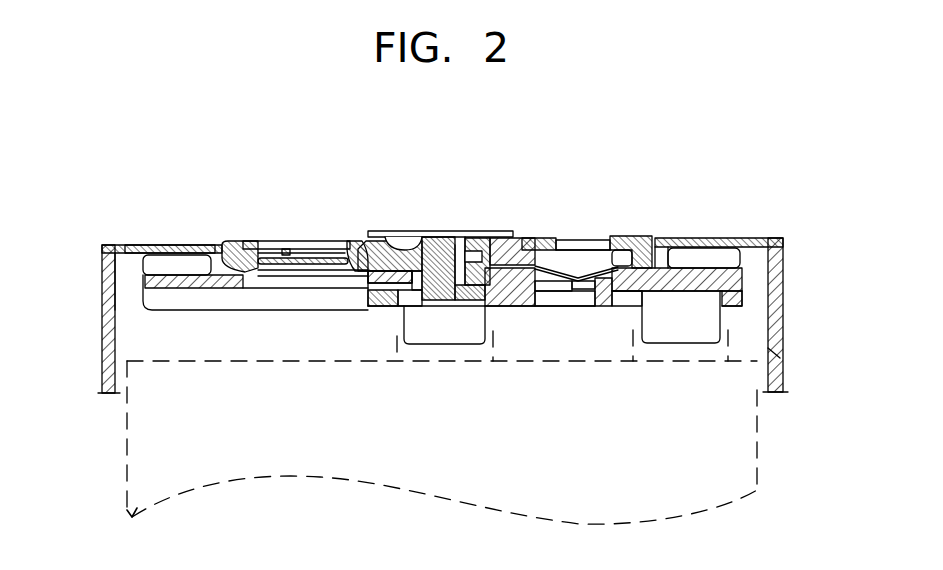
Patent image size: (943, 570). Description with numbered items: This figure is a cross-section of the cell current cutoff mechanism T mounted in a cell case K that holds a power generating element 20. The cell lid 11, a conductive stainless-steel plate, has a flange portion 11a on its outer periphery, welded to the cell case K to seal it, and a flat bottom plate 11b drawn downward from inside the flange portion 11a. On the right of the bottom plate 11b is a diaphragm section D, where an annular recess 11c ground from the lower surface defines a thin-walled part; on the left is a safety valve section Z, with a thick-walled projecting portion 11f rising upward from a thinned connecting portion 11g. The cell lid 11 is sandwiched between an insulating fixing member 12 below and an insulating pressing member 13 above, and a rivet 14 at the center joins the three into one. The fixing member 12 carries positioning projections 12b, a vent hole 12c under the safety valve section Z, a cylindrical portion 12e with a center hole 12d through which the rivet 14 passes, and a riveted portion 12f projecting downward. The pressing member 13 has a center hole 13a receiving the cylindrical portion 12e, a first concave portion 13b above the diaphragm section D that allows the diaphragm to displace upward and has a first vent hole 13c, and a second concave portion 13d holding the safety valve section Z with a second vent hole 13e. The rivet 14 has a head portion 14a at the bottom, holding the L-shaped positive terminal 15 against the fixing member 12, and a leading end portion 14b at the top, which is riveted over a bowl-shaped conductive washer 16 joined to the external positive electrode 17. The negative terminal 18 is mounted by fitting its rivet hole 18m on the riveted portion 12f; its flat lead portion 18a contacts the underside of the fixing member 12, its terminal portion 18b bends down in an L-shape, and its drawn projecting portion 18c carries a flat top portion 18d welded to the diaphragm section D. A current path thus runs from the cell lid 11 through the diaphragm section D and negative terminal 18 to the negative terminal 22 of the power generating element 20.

The cell lid 11 is at (715, 226).
The flange portion 11a is at (130, 245).
The bottom plate 11b is at (518, 240).
The annular recess 11c is at (538, 298).
The projecting portion 11f is at (292, 280).
The connecting portion 11g is at (270, 280).
The fixing member 12 is at (758, 278).
The positioning projections 12b is at (627, 300).
The vent hole 12c is at (282, 280).
The center hole 12d is at (428, 300).
The cylindrical portion 12e is at (423, 240).
The riveted portion 12f is at (768, 352).
The pressing member 13 is at (251, 228).
The center hole 13a is at (492, 300).
The first concave portion 13b is at (546, 240).
The first vent hole 13c is at (578, 240).
The second concave portion 13d is at (348, 242).
The second vent hole 13e is at (312, 242).
The rivet 14 is at (459, 316).
The head portion 14a is at (416, 306).
The leading end portion 14b is at (448, 234).
The positive terminal 15 is at (432, 337).
The conductive washer 16 is at (481, 240).
The external positive electrode 17 is at (405, 236).
The negative terminal 18 is at (681, 318).
The lead portion 18a is at (562, 298).
The terminal portion 18b is at (703, 298).
The projecting portion 18c is at (573, 300).
The top portion 18d is at (583, 298).
The rivet hole 18m is at (670, 298).
The power generating element 20 is at (757, 490).
The negative terminal of the power generating element 22 is at (783, 358).
The current cutoff mechanism T is at (178, 228).
The safety valve section Z is at (286, 234).
The diaphragm section D is at (584, 258).
The cell case K is at (90, 333).